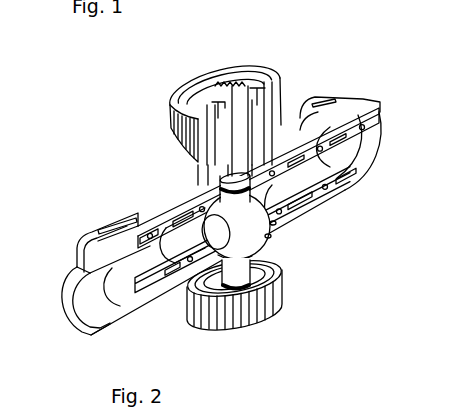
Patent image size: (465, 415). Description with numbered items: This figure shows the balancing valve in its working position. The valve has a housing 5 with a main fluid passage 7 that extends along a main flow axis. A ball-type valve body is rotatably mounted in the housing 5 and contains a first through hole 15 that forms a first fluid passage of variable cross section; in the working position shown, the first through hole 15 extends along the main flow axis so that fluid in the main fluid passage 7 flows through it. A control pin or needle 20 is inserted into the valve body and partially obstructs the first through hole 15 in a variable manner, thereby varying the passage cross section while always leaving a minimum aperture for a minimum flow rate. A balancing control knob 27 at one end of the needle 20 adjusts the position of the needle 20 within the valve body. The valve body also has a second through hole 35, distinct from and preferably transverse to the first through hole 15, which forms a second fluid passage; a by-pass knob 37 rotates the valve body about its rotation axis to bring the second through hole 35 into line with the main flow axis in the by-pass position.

The housing 5 is at (170, 207).
The main fluid passage 7 is at (318, 177).
The first through hole 15 is at (213, 235).
The control pin or needle 20 is at (243, 78).
The balancing control knob 27 is at (170, 135).
The second through hole 35 is at (283, 242).
The by-pass knob 37 is at (258, 322).